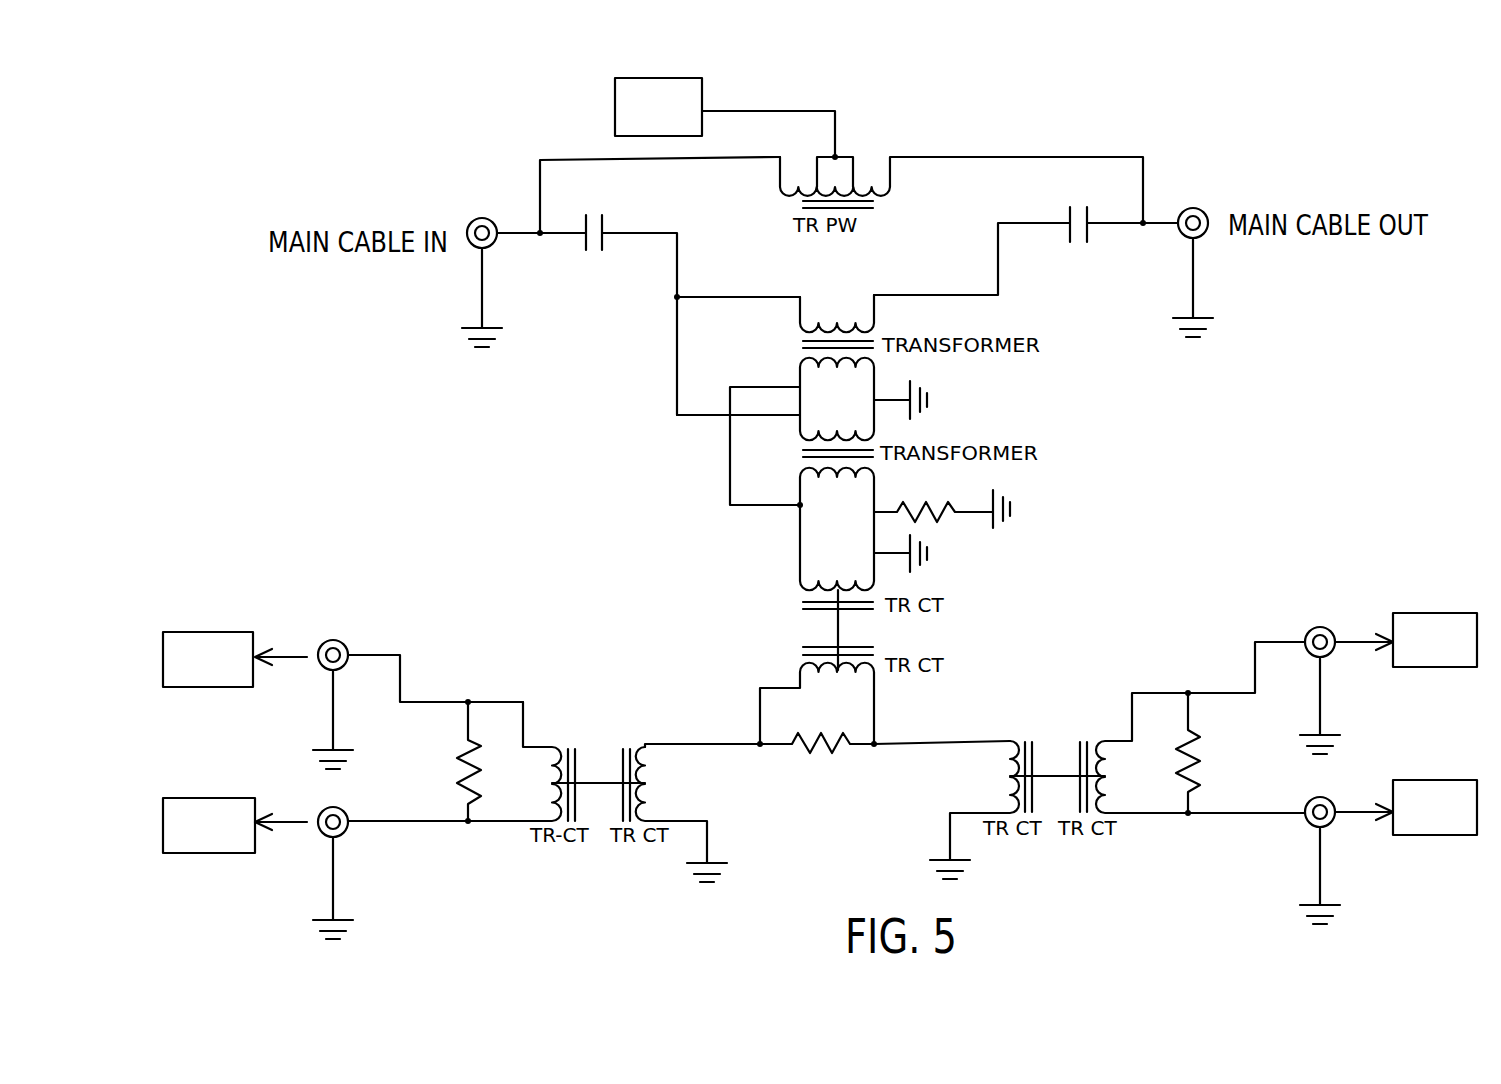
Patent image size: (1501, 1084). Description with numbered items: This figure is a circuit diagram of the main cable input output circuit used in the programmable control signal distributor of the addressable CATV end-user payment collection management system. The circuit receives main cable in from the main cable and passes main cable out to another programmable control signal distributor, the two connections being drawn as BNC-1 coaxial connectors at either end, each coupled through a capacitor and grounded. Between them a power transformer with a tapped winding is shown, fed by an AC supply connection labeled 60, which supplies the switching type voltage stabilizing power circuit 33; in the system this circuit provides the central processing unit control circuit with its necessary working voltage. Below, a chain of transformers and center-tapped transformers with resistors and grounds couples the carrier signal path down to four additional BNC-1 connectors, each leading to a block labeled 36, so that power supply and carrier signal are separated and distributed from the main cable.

The switching type voltage stabilizing power circuit 33 is at (658, 107).
The subscriber terminal unit 36 is at (820, 733).
The BNC connector 1 is at (832, 561).
The AC 60V power line 60 is at (770, 122).